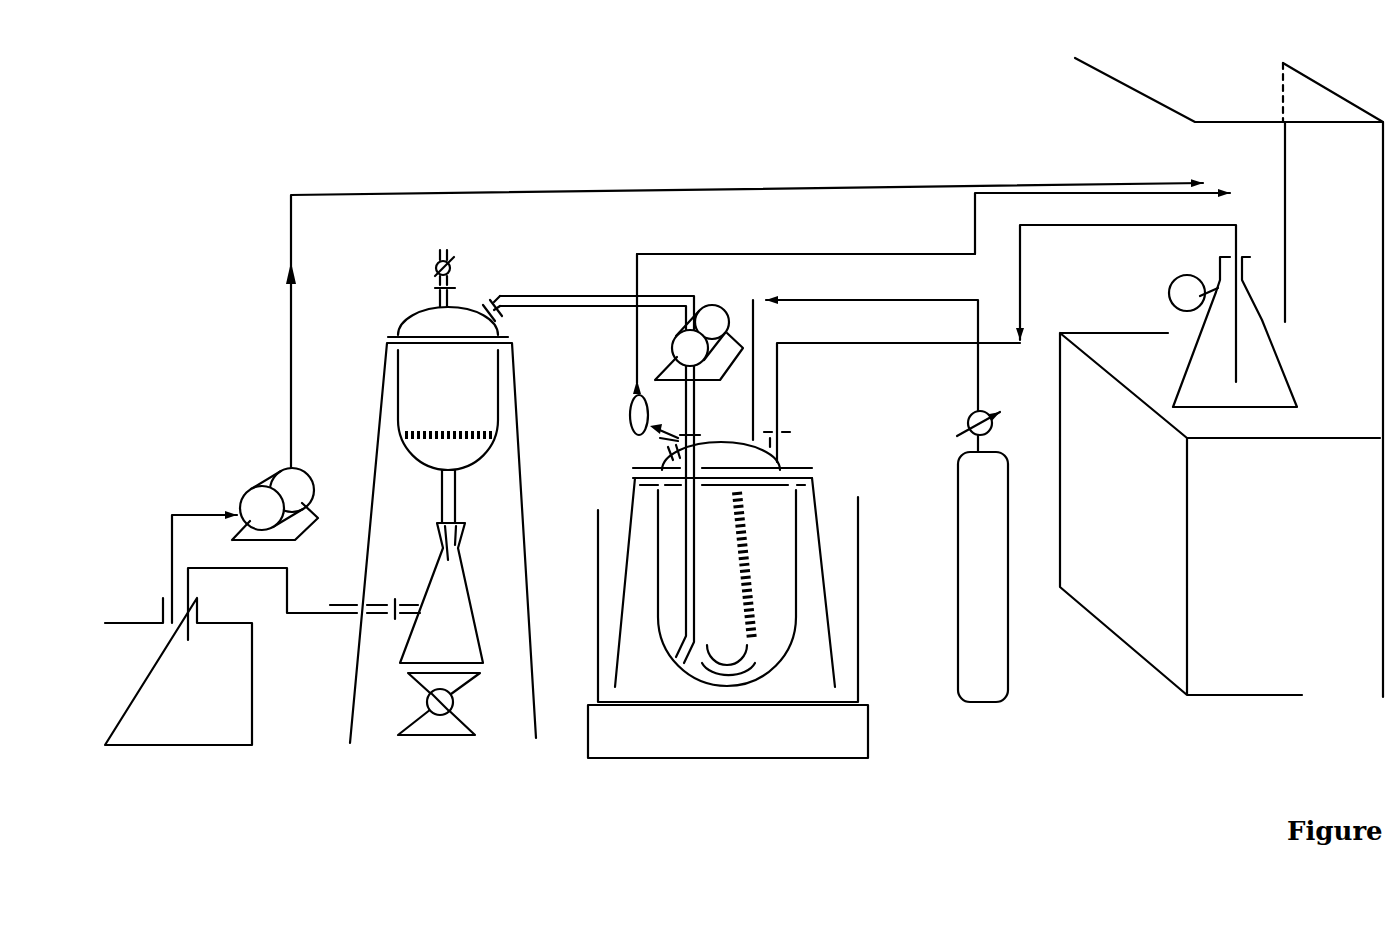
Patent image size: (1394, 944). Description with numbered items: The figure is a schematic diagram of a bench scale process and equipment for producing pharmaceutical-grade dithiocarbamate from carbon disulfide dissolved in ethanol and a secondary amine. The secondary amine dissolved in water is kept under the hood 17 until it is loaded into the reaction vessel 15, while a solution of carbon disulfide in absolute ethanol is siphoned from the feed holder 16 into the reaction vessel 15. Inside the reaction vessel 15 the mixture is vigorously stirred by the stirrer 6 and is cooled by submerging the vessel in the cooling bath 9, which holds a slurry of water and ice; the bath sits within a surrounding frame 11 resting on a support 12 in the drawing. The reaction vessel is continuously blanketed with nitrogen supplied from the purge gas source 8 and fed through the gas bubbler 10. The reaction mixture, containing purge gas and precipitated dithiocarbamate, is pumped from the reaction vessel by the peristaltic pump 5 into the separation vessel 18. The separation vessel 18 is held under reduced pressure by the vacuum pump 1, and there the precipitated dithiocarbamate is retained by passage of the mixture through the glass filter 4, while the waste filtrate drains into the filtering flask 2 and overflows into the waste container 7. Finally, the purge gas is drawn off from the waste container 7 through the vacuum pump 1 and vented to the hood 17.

The vacuum pump 1 is at (258, 478).
The filtering flask 2 is at (435, 637).
The glass filter 4 is at (497, 438).
The peristaltic pump 5 is at (668, 347).
The stirrer 6 is at (728, 675).
The waste container 7 is at (195, 712).
The purge gas source 8 is at (985, 548).
The cooling bath 9 is at (838, 603).
The gas bubbler 10 is at (632, 405).
The heating mantle frame 11 is at (863, 673).
The hopper support 12 is at (535, 683).
The reaction vessel 15 is at (778, 605).
The feed holder 16 is at (1258, 377).
The hood 17 is at (1248, 545).
The separation vessel 18 is at (447, 418).